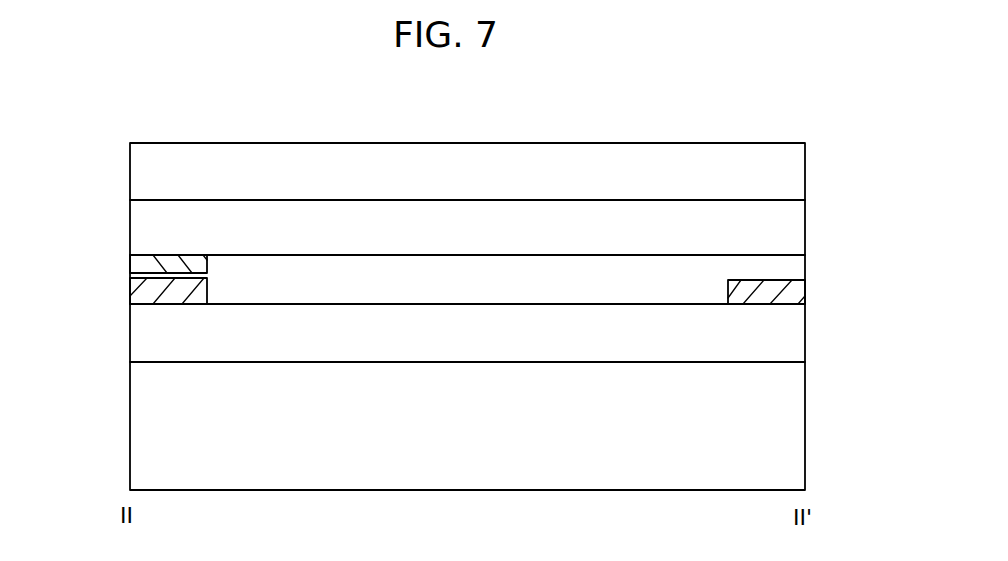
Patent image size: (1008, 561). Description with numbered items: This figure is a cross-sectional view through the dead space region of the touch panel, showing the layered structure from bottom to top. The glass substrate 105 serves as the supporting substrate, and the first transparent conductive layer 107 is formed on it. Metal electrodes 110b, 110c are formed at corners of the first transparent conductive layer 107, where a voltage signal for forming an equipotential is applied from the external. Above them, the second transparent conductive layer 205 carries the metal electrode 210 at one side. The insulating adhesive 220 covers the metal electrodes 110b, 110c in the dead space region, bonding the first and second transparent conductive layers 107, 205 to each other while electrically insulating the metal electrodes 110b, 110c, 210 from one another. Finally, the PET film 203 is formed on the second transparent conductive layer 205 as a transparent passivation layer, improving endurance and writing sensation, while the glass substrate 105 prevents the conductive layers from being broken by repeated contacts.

The glass substrate 105 is at (150, 433).
The first transparent conductive layer 107 is at (150, 345).
The metal electrode 110b is at (146, 294).
The metal electrode 110c is at (795, 292).
The metal electrode 210 is at (141, 269).
The insulating adhesive 220 is at (792, 267).
The second transparent conductive layer 205 is at (150, 237).
The PET film 203 is at (150, 179).